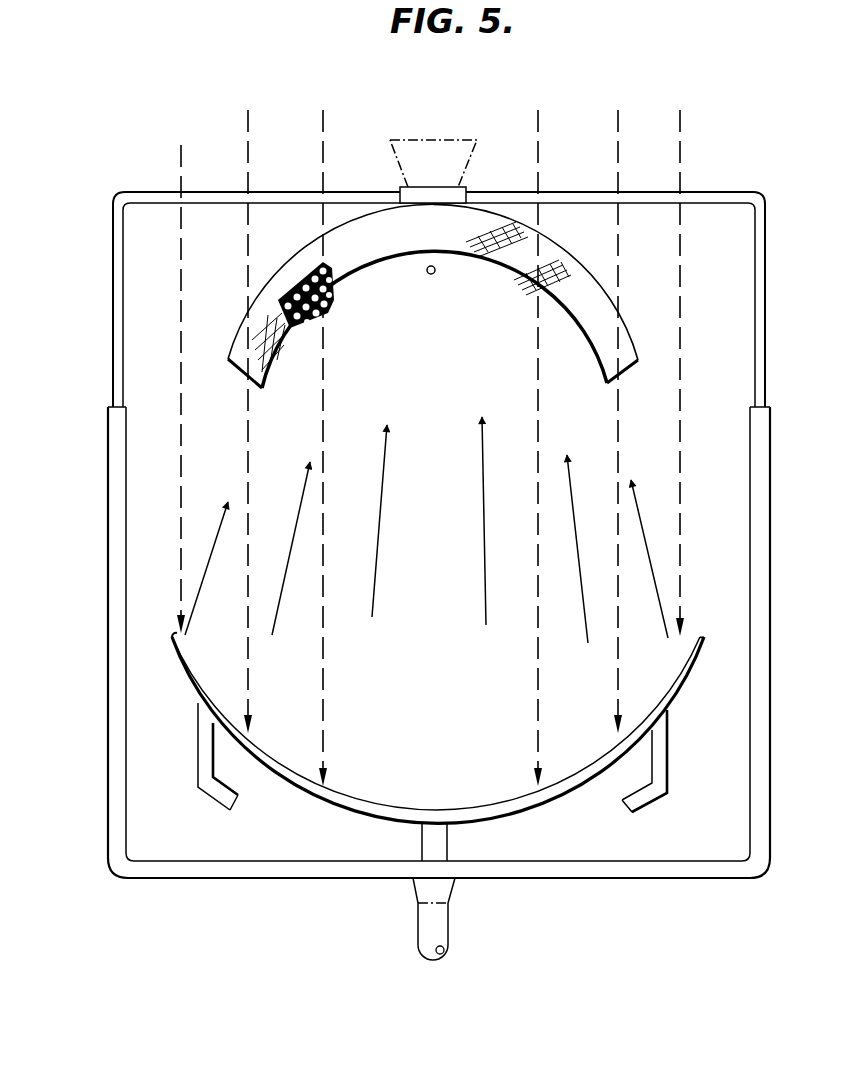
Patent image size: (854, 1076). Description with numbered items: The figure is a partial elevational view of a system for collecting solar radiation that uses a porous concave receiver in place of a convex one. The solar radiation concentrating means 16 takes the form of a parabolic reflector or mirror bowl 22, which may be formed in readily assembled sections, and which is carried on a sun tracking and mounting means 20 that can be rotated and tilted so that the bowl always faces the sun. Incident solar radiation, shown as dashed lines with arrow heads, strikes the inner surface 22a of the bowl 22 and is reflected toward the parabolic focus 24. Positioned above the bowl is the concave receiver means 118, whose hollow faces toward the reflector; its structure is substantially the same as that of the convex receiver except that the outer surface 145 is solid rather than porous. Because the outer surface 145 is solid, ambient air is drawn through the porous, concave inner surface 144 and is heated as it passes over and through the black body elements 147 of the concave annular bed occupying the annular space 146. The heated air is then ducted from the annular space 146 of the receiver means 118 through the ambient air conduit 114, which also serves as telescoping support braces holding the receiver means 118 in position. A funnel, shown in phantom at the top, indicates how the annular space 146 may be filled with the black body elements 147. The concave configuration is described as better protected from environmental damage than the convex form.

The solar radiation concentrating means 16 is at (453, 743).
The sun tracking and mounting means 20 is at (656, 808).
The parabolic reflector or mirror bowl 22 is at (512, 822).
The inner surface 22a is at (388, 808).
The parabolic focus 24 is at (435, 270).
The ambient air conduit 114 is at (108, 435).
The concave receiver means 118 is at (592, 297).
The concave inner surface 144 is at (383, 262).
The outer surface 145 is at (248, 322).
The annular space 146 is at (583, 325).
The black body elements 147 is at (328, 310).